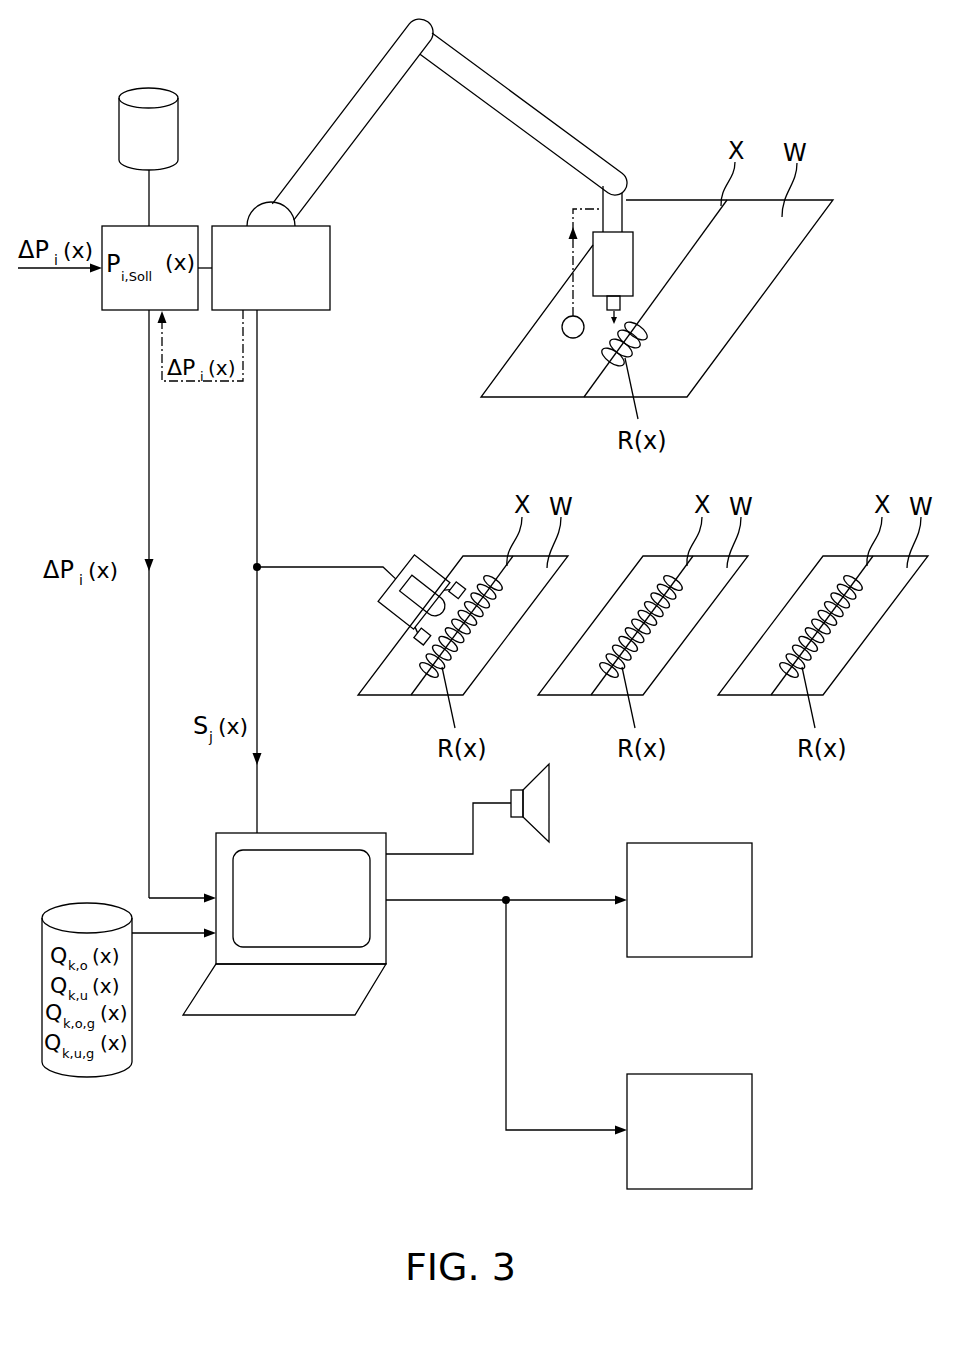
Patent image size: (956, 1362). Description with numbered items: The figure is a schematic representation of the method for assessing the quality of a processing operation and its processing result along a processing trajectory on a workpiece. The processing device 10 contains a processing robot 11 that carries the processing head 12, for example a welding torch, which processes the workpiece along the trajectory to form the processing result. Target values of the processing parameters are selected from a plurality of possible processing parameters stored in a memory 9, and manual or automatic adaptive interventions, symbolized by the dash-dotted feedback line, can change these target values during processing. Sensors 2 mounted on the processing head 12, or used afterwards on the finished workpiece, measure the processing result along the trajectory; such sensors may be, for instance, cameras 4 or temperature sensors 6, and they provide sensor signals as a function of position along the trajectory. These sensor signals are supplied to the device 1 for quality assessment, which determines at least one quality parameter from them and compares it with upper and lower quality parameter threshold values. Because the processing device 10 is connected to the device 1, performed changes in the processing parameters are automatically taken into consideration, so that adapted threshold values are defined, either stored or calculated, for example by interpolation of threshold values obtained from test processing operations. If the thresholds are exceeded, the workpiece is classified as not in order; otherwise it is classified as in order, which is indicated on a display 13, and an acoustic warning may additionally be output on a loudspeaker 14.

The device for quality assessment 1 is at (223, 999).
The sensors 2 is at (562, 323).
The cameras 4 is at (418, 595).
The temperature sensors 6 is at (457, 584).
The memory 9 is at (150, 100).
The processing device 10 is at (286, 100).
The processing robot 11 is at (385, 80).
The processing head 12 is at (625, 249).
The display 13 is at (752, 900).
The loudspeaker 14 is at (550, 775).